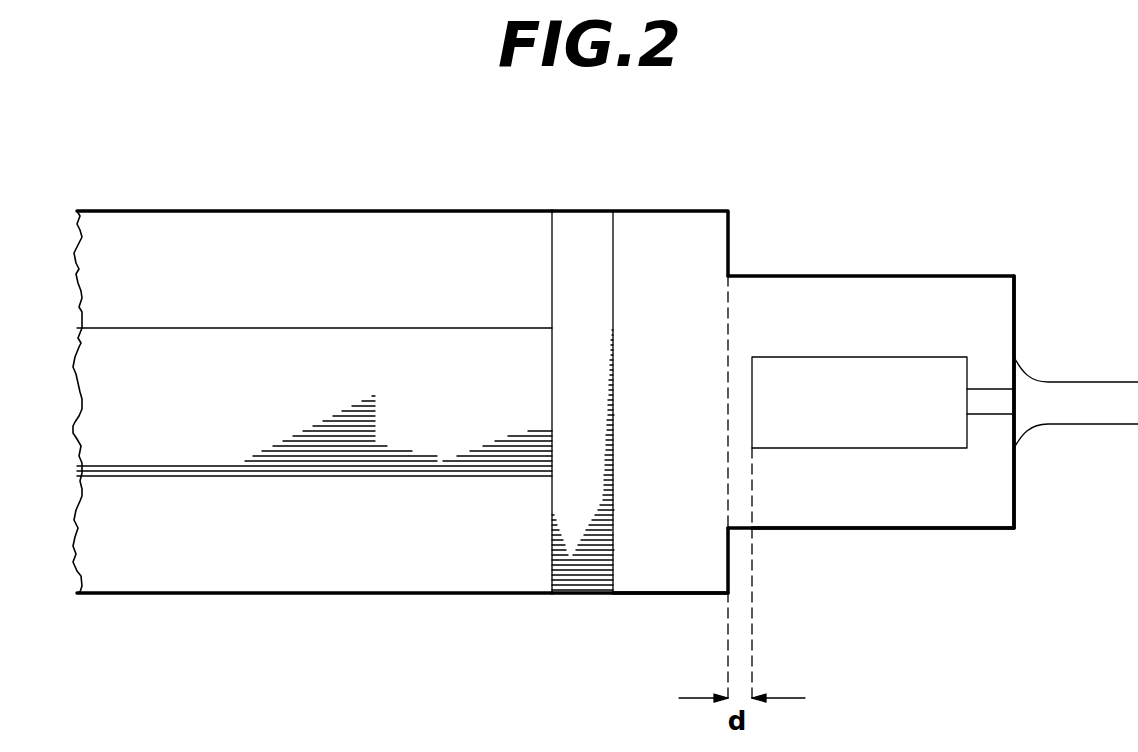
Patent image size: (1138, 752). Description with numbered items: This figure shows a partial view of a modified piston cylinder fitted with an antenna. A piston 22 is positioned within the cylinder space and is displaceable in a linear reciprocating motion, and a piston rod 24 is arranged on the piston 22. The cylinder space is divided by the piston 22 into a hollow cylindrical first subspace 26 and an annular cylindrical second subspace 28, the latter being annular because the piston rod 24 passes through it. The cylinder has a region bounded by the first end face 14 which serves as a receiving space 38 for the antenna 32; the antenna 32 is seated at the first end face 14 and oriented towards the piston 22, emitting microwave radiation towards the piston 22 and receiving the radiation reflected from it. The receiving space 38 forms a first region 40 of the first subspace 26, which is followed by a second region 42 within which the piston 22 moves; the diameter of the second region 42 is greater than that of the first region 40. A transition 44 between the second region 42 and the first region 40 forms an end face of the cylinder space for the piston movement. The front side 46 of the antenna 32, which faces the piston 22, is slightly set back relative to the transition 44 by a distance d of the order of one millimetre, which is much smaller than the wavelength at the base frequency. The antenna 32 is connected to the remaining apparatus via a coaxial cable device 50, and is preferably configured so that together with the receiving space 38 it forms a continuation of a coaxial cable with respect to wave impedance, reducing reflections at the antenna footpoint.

The first end face 14 is at (1014, 500).
The piston 22 is at (588, 565).
The piston rod 24 is at (322, 352).
The first subspace 26 is at (676, 560).
The second subspace 28 is at (288, 562).
The antenna 32 is at (812, 427).
The receiving space 38 is at (938, 505).
The first region 40 is at (878, 302).
The second region 42 is at (670, 228).
The transition 44 is at (728, 278).
The front side 46 is at (752, 386).
The coaxial cable device 50 is at (1113, 401).